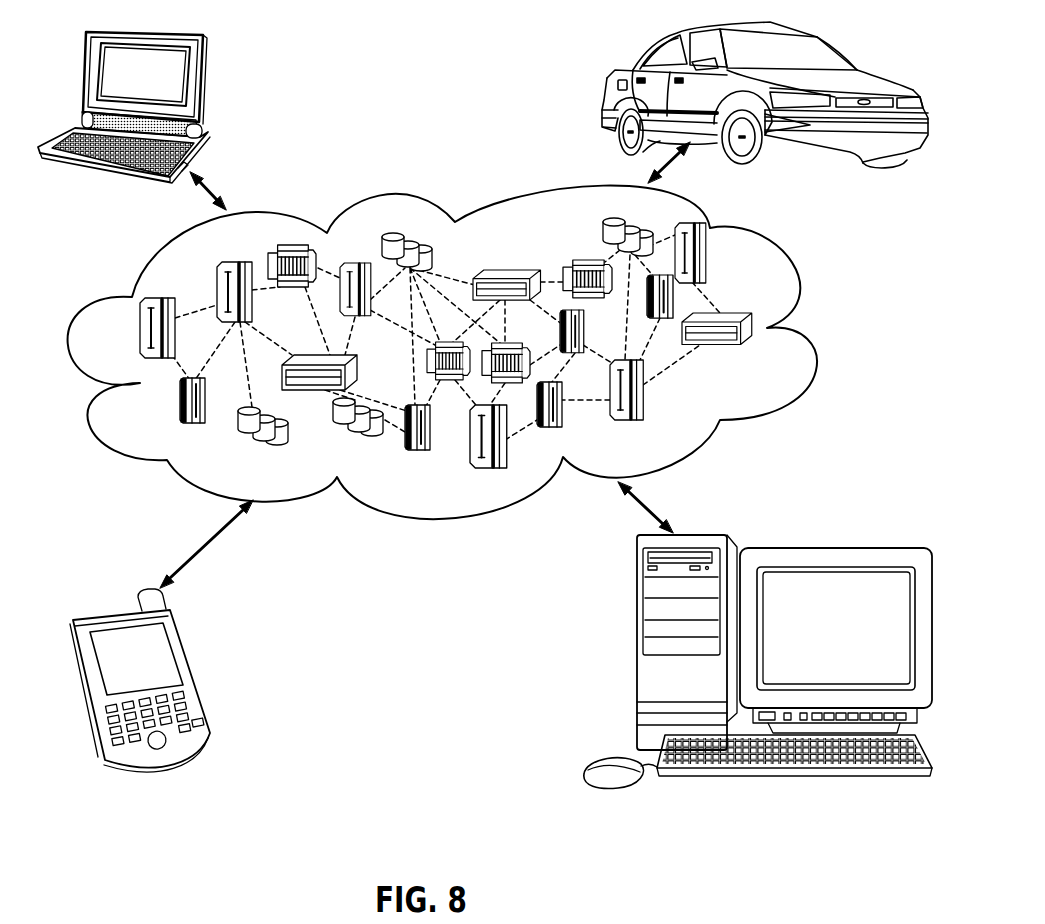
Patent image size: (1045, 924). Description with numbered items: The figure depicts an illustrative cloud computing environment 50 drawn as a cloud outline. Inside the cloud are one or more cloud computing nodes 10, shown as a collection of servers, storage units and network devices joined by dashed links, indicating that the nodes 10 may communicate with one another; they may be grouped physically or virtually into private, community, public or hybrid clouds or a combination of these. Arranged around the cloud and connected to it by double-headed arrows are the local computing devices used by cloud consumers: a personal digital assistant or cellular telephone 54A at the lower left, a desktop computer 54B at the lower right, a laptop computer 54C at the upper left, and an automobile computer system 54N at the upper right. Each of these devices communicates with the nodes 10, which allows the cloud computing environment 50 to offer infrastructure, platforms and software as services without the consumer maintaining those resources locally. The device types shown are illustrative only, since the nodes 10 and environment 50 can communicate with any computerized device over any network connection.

The cloud computing nodes 10 is at (778, 354).
The cloud computing environment 50 is at (798, 288).
The personal digital assistant (PDA) or cellular telephone 54A is at (192, 668).
The desktop computer 54B is at (637, 650).
The laptop computer 54C is at (203, 78).
The automobile computer system 54N is at (610, 85).